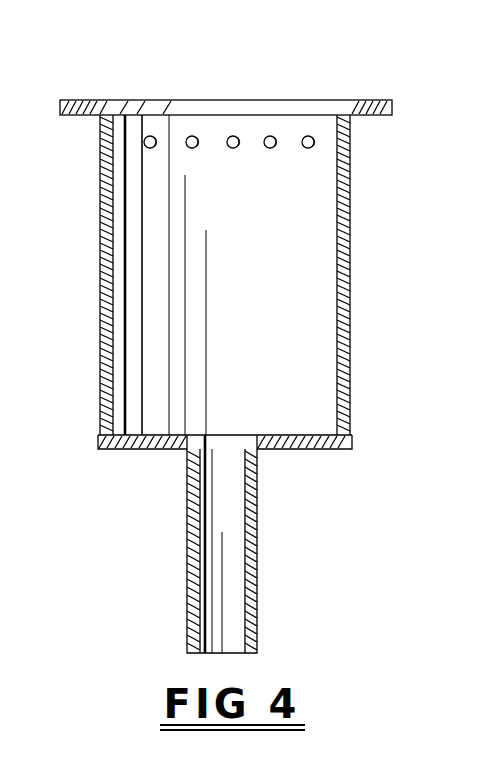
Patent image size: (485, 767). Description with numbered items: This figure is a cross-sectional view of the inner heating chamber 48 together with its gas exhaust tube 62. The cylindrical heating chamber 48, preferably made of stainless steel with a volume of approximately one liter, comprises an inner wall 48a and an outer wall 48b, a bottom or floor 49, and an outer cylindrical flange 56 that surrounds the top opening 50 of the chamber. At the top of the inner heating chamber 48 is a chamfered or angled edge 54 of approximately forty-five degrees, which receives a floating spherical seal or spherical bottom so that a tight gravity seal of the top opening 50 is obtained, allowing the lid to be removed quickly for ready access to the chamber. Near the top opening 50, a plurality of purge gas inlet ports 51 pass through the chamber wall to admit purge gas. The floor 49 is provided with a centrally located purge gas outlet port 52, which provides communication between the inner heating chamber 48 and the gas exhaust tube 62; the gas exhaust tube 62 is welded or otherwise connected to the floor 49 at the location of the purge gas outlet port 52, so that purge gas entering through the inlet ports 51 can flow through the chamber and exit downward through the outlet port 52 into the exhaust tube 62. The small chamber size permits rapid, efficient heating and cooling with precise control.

The inner heating chamber 48 is at (229, 339).
The inner wall 48a is at (337, 219).
The outer wall 48b is at (350, 290).
The floor 49 is at (250, 305).
The top opening 50 is at (248, 70).
The purge gas inlet ports 51 is at (336, 139).
The purge gas outlet port 52 is at (225, 425).
The chamfered edge 54 is at (112, 100).
The outer cylindrical flange 56 is at (394, 107).
The gas exhaust tube 62 is at (187, 530).